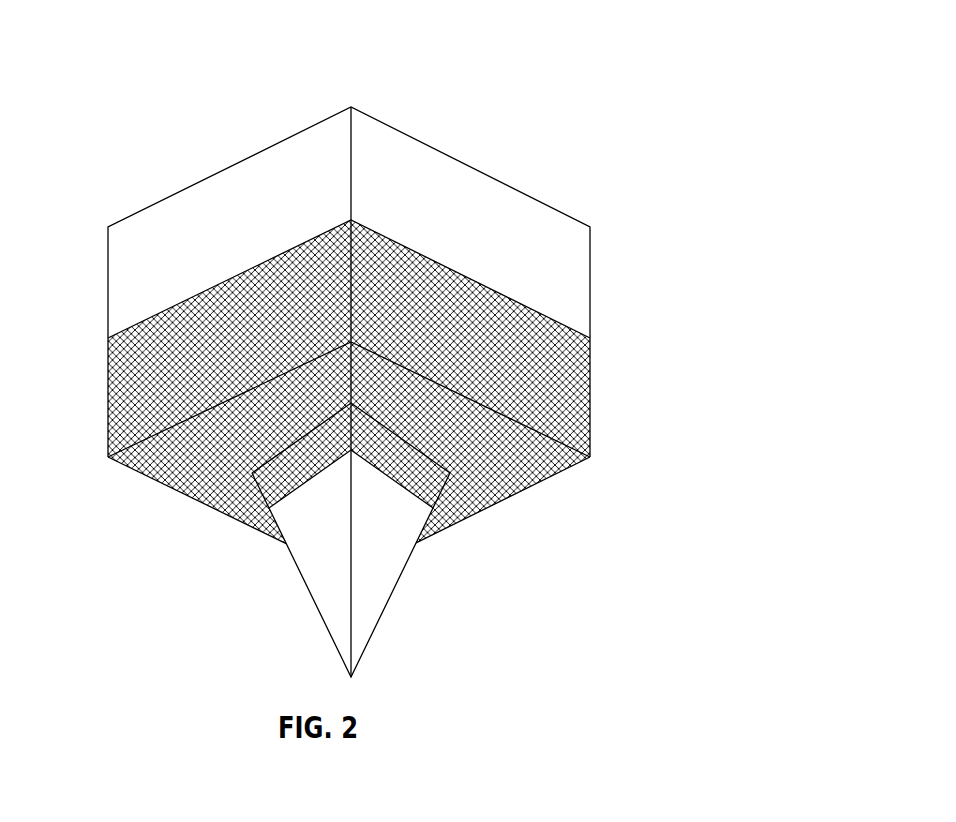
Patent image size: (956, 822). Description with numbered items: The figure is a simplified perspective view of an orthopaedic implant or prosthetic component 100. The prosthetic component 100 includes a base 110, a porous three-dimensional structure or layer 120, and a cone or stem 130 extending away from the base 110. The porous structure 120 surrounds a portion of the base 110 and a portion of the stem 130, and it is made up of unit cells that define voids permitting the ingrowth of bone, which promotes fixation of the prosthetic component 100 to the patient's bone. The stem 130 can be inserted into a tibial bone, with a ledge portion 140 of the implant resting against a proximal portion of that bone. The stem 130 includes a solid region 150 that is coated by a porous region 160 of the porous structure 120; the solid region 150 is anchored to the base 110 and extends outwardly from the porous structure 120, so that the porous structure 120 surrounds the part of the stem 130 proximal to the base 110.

The prosthetic component 100 is at (668, 43).
The base 110 is at (210, 175).
The porous three-dimensional structure 120 is at (592, 403).
The stem 130 is at (297, 598).
The ledge portion 140 is at (131, 470).
The solid region 150 is at (382, 620).
The porous region 160 is at (229, 519).